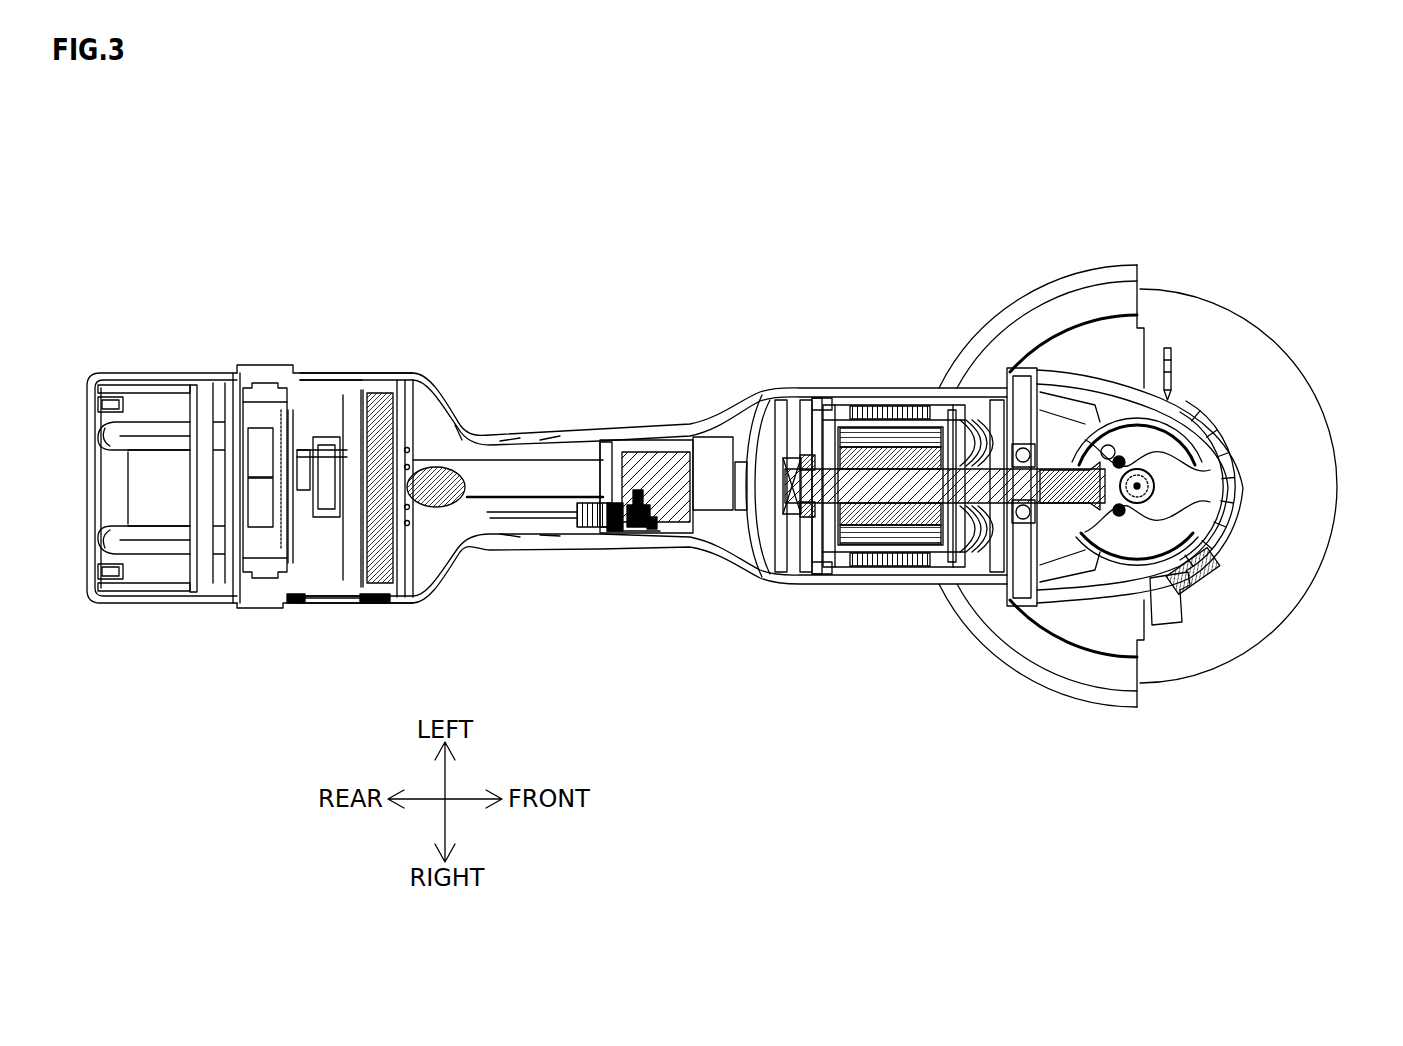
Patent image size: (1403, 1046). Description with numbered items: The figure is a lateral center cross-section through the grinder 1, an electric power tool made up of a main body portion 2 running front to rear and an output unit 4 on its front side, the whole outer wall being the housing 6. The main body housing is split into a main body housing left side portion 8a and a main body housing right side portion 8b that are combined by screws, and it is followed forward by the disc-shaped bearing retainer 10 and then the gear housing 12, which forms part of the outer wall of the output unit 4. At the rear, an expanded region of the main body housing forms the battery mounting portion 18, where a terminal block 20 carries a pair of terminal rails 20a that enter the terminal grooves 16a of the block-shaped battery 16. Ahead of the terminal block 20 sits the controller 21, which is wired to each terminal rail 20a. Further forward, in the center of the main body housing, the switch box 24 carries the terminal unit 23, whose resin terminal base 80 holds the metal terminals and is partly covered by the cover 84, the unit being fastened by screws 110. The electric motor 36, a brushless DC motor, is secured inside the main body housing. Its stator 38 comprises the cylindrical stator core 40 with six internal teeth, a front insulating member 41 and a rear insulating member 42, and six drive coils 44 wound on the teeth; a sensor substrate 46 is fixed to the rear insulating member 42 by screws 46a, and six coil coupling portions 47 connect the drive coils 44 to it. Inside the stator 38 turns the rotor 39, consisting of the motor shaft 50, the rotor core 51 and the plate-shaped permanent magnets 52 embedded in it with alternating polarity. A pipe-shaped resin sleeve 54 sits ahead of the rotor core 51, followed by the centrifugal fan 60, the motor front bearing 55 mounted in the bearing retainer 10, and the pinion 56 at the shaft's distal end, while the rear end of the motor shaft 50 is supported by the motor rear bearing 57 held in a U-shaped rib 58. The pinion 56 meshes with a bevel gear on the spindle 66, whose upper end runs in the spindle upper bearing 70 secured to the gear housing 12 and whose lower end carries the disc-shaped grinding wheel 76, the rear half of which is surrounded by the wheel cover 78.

The grinder 1 is at (322, 142).
The main body portion 2 is at (583, 246).
The output unit 4 is at (1204, 151).
The housing 6 is at (558, 597).
The main body housing left side portion 8a is at (505, 430).
The main body housing right side portion 8b is at (530, 548).
The bearing retainer 10 is at (1027, 373).
The gear housing 12 is at (1200, 415).
The battery 16 is at (143, 375).
The terminal grooves 16a is at (188, 370).
The battery mounting portion 18 is at (301, 307).
The terminal block 20 is at (310, 552).
The terminal rails 20a is at (237, 368).
The controller 21 is at (377, 370).
The terminal unit 23 is at (583, 472).
The switch box 24 is at (645, 460).
The electric motor 36 is at (878, 339).
The stator 38 is at (847, 343).
The rotor 39 is at (747, 482).
The stator core 40 is at (907, 397).
The front insulating member 41 is at (925, 575).
The rear insulating member 42 is at (847, 393).
The drive coils 44 is at (888, 397).
The sensor substrate 46 is at (817, 575).
The screws 46a is at (820, 397).
The coil coupling portions 47 is at (803, 397).
The motor shaft 50 is at (733, 473).
The rotor core 51 is at (868, 575).
The permanent magnets 52 is at (927, 397).
The resin sleeve 54 is at (940, 393).
The motor front bearing 55 is at (993, 575).
The pinion 56 is at (1022, 575).
The motor rear bearing 57 is at (760, 572).
The rib 58 is at (790, 393).
The fan 60 is at (968, 585).
The spindle 66 is at (1172, 445).
The spindle upper bearing 70 is at (1225, 512).
The grinding wheel 76 is at (1268, 612).
The wheel cover 78 is at (1118, 695).
The terminal base 80 is at (606, 533).
The cover 84 is at (582, 537).
The screws 110 is at (640, 545).